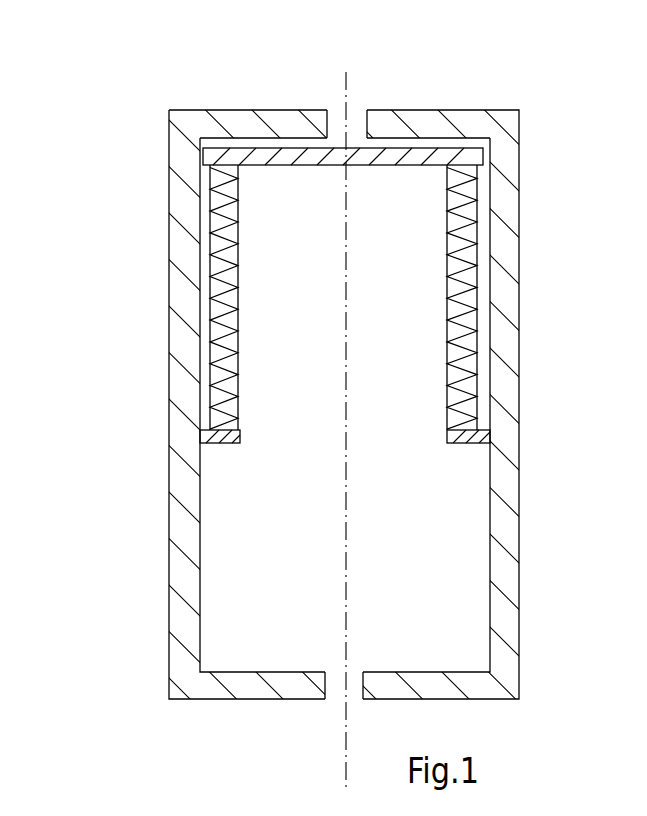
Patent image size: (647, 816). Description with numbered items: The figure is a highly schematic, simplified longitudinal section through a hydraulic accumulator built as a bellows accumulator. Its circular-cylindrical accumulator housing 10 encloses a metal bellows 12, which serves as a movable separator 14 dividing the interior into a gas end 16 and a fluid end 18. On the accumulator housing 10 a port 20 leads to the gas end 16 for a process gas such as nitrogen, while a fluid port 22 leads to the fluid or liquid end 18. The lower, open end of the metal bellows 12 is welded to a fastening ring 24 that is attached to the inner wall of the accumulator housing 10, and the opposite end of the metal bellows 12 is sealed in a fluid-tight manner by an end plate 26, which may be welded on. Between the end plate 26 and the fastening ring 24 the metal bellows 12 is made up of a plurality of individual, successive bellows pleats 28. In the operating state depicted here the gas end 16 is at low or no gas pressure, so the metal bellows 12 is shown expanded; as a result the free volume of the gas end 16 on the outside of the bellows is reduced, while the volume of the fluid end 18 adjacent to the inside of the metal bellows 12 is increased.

The accumulator housing 10 is at (505, 605).
The metal bellows 12 is at (484, 345).
The movable separator 14 is at (520, 221).
The gas end 16 is at (460, 137).
The fluid end 18 is at (410, 566).
The port 20 is at (355, 125).
The fluid port 22 is at (333, 697).
The fastening ring 24 is at (478, 445).
The end plate 26 is at (260, 155).
The bellows pleats 28 is at (216, 298).